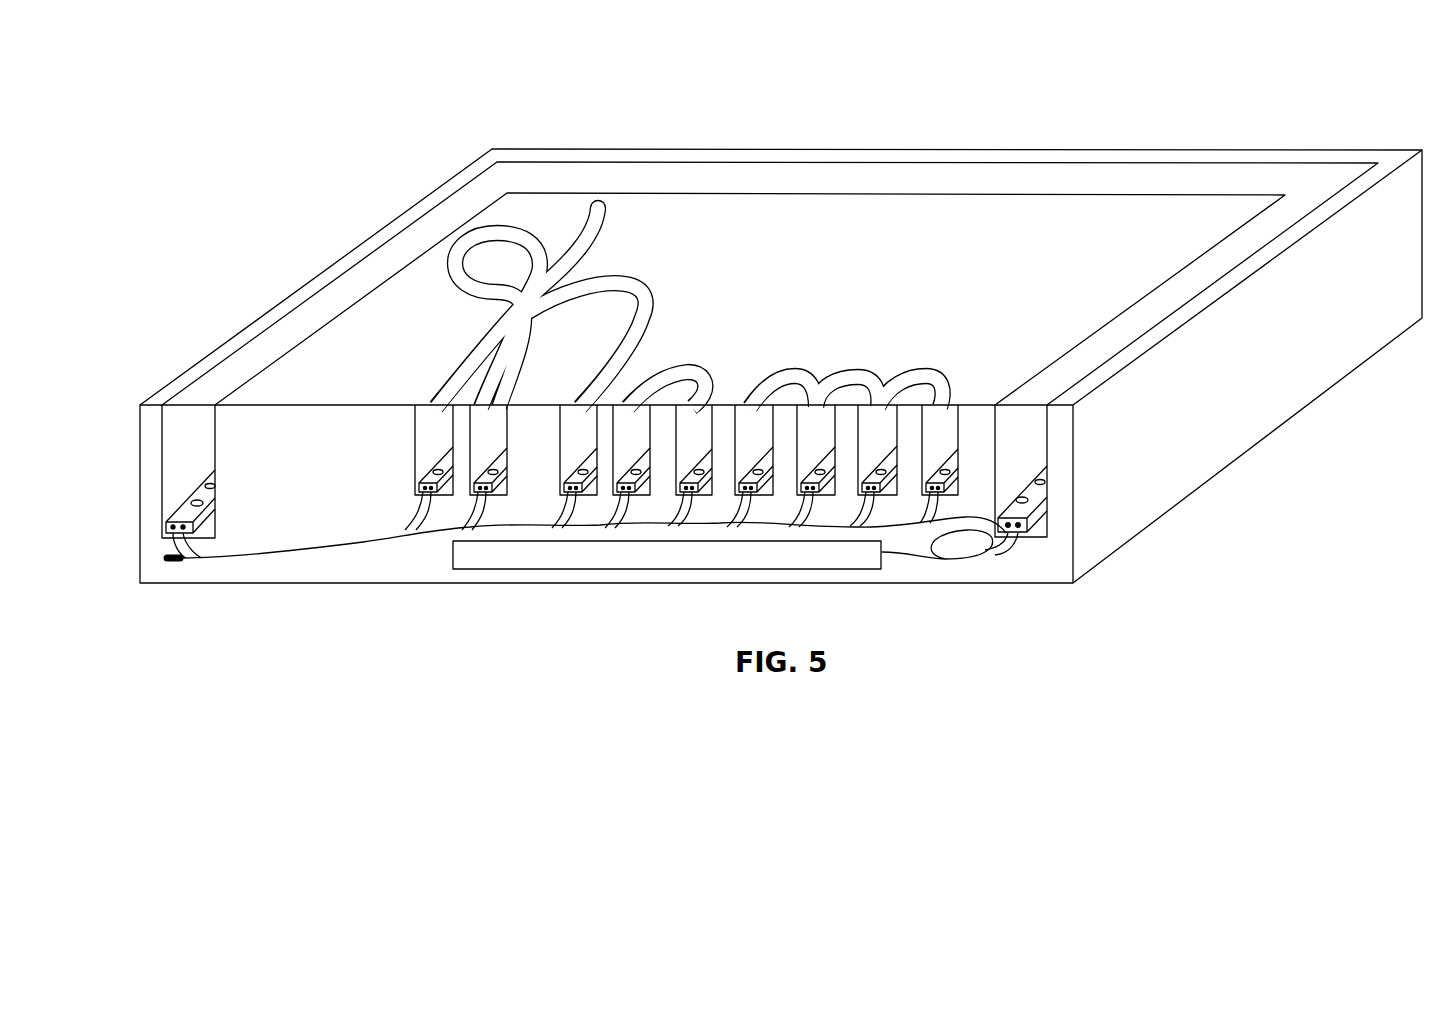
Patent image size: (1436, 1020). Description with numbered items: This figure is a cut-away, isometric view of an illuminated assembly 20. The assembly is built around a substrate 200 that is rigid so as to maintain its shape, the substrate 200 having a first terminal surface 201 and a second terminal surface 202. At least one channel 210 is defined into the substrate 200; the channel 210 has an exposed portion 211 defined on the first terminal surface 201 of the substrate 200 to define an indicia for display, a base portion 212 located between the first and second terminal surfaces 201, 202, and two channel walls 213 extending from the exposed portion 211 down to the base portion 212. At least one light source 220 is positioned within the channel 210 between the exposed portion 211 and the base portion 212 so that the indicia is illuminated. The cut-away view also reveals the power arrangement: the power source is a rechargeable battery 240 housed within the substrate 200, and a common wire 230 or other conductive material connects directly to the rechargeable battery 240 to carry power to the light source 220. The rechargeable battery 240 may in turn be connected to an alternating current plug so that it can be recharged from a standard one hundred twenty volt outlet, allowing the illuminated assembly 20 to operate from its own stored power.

The illuminated assembly 20 is at (1062, 96).
The substrate 200 is at (412, 562).
The first terminal surface 201 is at (318, 407).
The second terminal surface 202 is at (263, 584).
The channel 210 is at (1325, 180).
The exposed portion 211 is at (1090, 355).
The base portion 212 is at (1027, 540).
The channel walls 213 is at (930, 555).
The light source 220 is at (1047, 485).
The common wire 230 is at (931, 555).
The rechargeable battery 240 is at (650, 553).